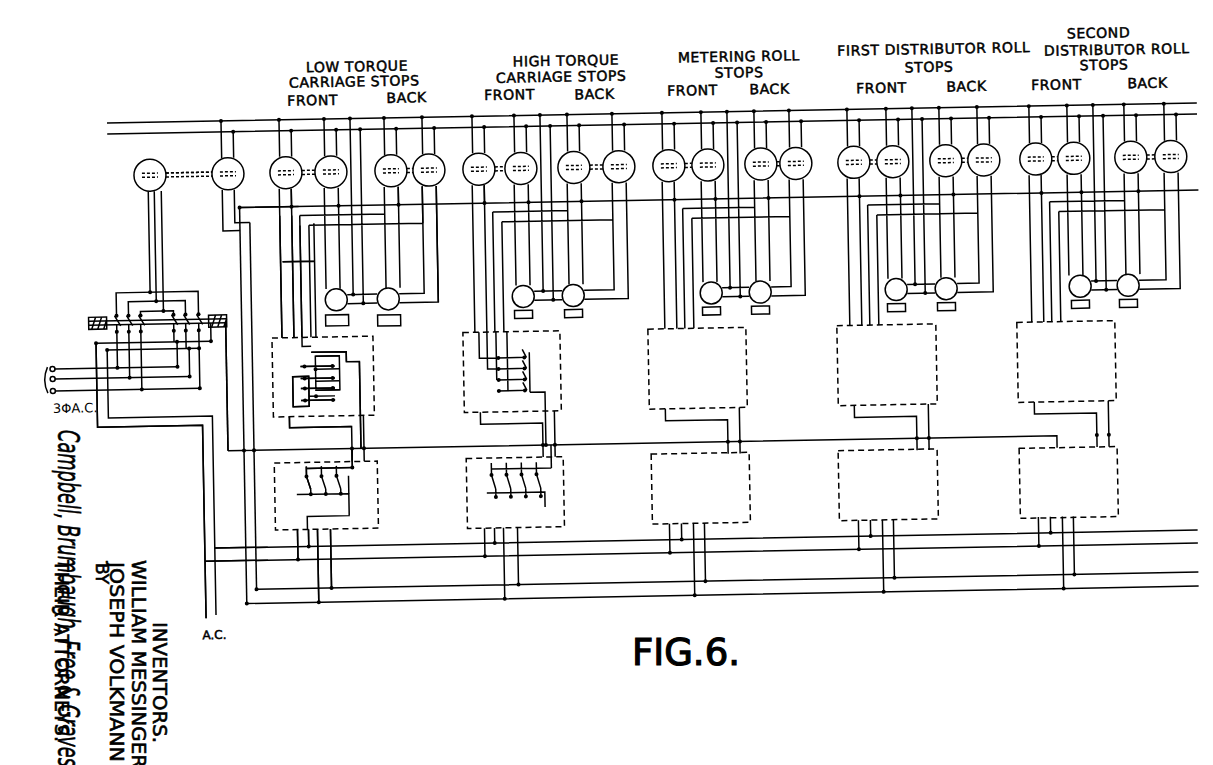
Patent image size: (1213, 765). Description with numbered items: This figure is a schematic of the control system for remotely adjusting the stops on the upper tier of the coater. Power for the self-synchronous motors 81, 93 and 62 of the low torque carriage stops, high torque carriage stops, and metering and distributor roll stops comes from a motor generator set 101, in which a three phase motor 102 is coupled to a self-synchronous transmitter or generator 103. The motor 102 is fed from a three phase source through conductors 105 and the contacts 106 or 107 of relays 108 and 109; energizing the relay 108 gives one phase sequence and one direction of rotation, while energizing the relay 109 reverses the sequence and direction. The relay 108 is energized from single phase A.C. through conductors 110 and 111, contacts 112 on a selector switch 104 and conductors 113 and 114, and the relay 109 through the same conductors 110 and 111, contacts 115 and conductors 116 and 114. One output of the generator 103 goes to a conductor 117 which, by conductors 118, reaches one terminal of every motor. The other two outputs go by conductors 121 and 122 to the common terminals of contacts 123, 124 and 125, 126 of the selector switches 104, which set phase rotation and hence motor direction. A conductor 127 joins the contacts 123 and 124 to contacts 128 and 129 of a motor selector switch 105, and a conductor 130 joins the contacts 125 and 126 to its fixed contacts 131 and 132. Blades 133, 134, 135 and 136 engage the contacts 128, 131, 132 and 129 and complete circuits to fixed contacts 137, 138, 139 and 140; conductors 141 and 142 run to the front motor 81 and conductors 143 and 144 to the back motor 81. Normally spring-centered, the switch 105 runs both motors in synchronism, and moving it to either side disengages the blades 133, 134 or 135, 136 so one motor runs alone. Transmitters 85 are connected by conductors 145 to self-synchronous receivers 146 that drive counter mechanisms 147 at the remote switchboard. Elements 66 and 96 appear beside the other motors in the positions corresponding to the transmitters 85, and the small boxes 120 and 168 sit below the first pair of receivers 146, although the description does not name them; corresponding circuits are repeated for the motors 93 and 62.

The self-synchronous motor 62 is at (1135, 163).
The distributor roll stop solenoid 66 is at (1170, 160).
The self-synchronous motor 81 is at (290, 163).
The self-synchronous transmitter 85 is at (335, 162).
The self-synchronous motor 93 is at (472, 164).
The high torque carriage stop solenoid 96 is at (514, 164).
The motor generator set 101 is at (188, 158).
The three phase motor 102 is at (133, 175).
The self-synchronous transmitter (generator) 103 is at (213, 188).
The selector switch 104 is at (1134, 497).
The motor selector switch 105 is at (556, 376).
The switch contacts 106 is at (113, 305).
The switch contacts 107 is at (197, 305).
The relay 108 is at (85, 321).
The relay 109 is at (215, 318).
The conductor 110 is at (207, 585).
The conductor 111 is at (288, 563).
The contacts 112 is at (298, 530).
The conductor 113 is at (207, 545).
The conductor 114 is at (147, 427).
The contacts 115 is at (300, 484).
The conductor 116 is at (232, 466).
The conductor 117 is at (258, 210).
The conductors 118 is at (294, 201).
The relay 120 is at (337, 320).
The conductor 121 is at (238, 254).
The conductor 122 is at (245, 315).
The contact 123 is at (330, 475).
The contact 124 is at (318, 530).
The contact 125 is at (350, 477).
The contact 126 is at (342, 515).
The conductor 127 is at (355, 433).
The contact 128 is at (320, 365).
The contact 129 is at (290, 432).
The conductor 130 is at (328, 440).
The fixed contact 131 is at (336, 372).
The fixed contact 132 is at (336, 384).
The switch blade 133 is at (298, 370).
The switch blade 134 is at (296, 394).
The switch blade 135 is at (300, 404).
The switch blade 136 is at (300, 412).
The fixed contact 137 is at (308, 368).
The fixed contact 138 is at (298, 382).
The fixed contact 139 is at (336, 394).
The fixed contact 140 is at (330, 406).
The conductor 141 is at (290, 293).
The conductor 142 is at (278, 245).
The conductor 143 is at (306, 249).
The conductor 144 is at (280, 268).
The conductors 145 is at (435, 250).
The self-synchronous receiver 146 is at (1124, 293).
The counter mechanism 147 is at (1124, 337).
The relay 168 is at (389, 320).